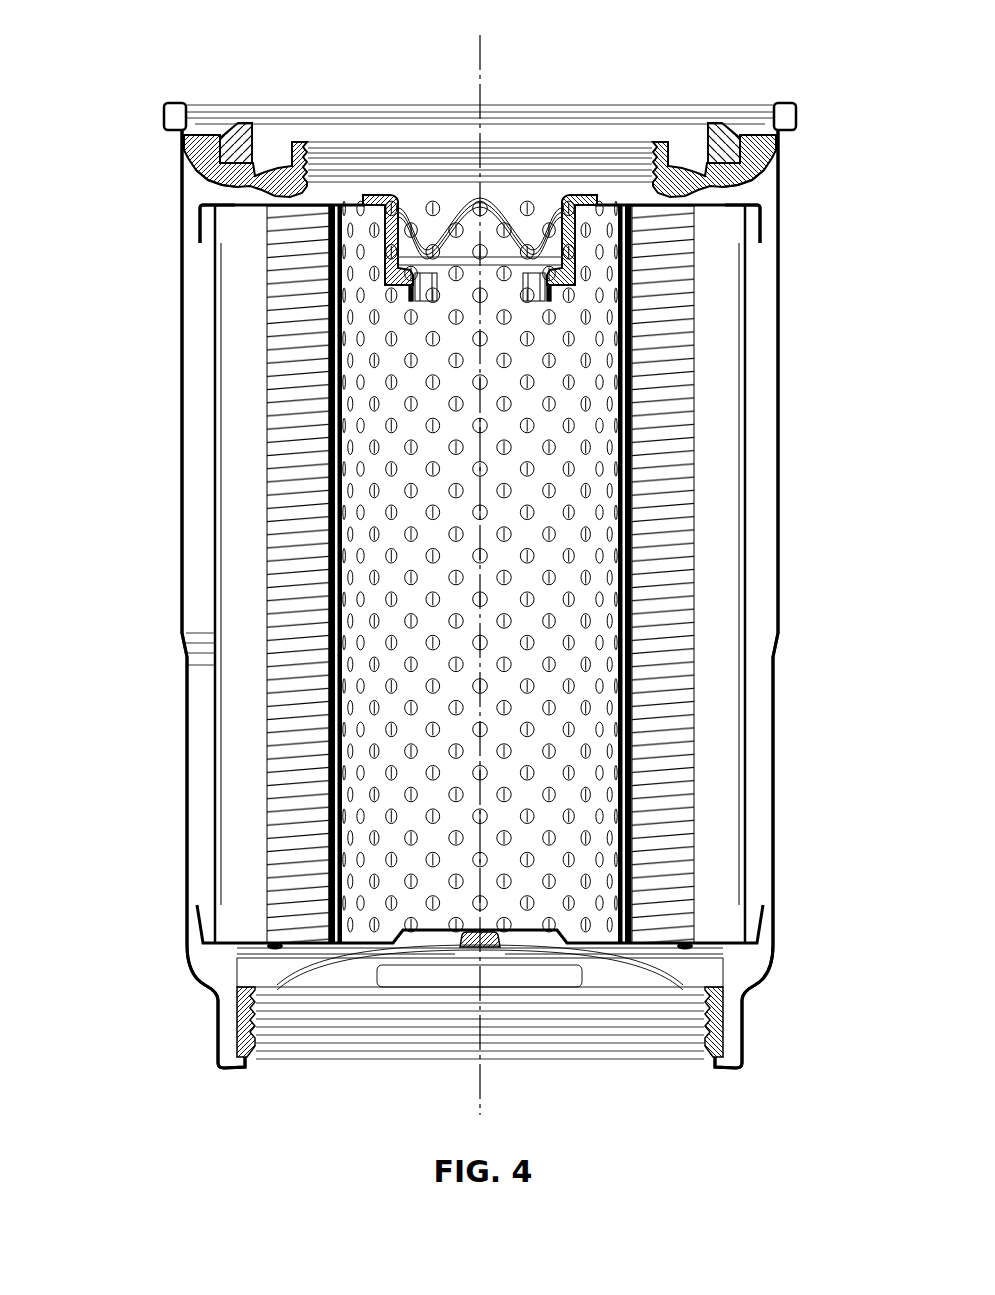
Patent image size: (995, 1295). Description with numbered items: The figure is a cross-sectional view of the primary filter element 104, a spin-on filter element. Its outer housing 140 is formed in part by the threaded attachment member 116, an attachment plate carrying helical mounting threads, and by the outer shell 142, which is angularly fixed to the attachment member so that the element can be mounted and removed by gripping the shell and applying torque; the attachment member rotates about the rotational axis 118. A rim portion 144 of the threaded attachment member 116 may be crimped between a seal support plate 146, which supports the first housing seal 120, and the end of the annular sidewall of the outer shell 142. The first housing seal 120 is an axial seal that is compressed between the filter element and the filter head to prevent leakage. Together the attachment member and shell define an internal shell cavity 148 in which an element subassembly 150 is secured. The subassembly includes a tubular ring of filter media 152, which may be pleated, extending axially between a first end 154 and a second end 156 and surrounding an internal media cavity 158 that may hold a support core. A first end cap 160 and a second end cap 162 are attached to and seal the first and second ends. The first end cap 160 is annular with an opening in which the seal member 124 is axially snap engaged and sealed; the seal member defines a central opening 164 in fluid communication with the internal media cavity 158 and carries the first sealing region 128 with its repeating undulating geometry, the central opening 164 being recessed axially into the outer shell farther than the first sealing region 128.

The primary filter element 104 is at (155, 556).
The threaded attachment member 116 is at (207, 193).
The rotational axis 118 is at (505, 560).
The first housing seal 120 is at (250, 123).
The seal member 124 is at (575, 278).
The first sealing region 128 is at (538, 238).
The outer housing 140 is at (155, 158).
The outer shell 142 is at (180, 375).
The rim portion 144 is at (181, 145).
The seal support plate 146 is at (215, 133).
The internal shell cavity 148 is at (206, 479).
The element subassembly 150 is at (192, 300).
The tubular ring of filter media 152 is at (215, 597).
The first end 154 is at (252, 203).
The second end 156 is at (228, 950).
The internal media cavity 158 is at (418, 732).
The first end cap 160 is at (200, 222).
The second end cap 162 is at (203, 925).
The central opening 164 is at (515, 286).